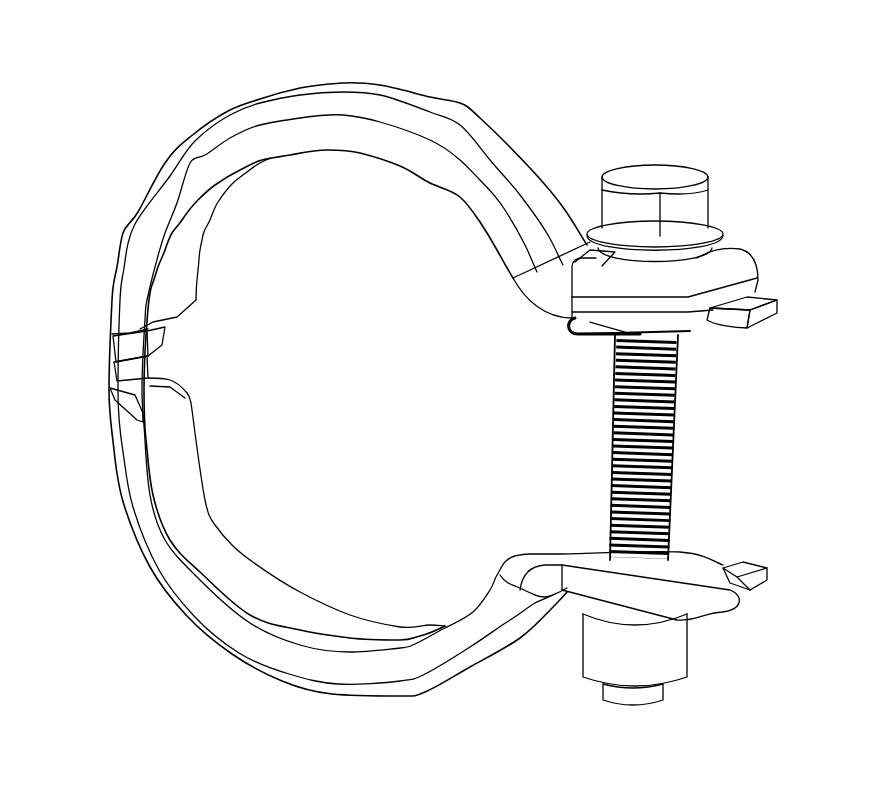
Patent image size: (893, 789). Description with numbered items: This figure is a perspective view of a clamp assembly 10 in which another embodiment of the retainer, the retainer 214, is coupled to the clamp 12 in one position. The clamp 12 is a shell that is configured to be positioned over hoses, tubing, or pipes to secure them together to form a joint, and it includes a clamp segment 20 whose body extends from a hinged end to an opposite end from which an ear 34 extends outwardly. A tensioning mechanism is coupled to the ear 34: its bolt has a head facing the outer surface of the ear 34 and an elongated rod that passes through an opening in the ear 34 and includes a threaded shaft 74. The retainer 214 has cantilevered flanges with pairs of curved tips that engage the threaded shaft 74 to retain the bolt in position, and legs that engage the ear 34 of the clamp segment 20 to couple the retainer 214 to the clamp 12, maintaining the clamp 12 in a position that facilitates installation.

The clamp assembly 10 is at (752, 86).
The clamp 12 is at (257, 663).
The clamp segment 20 is at (490, 138).
The ear 34 is at (733, 265).
The threaded shaft 74 is at (673, 438).
The retainer 214 is at (716, 350).